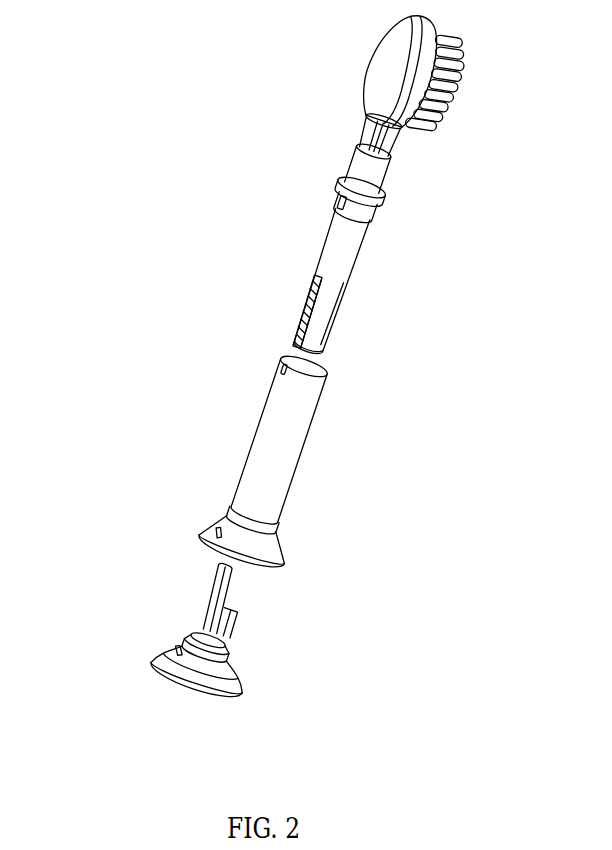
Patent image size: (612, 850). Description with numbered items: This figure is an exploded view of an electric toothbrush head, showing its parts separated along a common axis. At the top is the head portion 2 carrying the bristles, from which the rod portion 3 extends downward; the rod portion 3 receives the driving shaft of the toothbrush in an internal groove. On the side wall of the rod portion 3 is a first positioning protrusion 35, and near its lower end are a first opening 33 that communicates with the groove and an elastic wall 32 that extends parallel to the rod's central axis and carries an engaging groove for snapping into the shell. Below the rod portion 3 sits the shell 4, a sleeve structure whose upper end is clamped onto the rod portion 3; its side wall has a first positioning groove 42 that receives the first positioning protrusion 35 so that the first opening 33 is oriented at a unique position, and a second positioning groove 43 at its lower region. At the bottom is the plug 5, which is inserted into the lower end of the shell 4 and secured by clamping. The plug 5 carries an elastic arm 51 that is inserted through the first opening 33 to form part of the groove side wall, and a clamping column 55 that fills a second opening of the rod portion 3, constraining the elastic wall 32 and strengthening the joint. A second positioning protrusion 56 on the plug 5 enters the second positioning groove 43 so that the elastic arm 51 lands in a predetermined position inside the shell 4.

The head portion 2 is at (378, 82).
The rod portion 3 is at (332, 257).
The first positioning protrusion 35 is at (343, 210).
The first opening 33 is at (305, 312).
The elastic wall 32 is at (295, 333).
The shell 4 is at (255, 462).
The first positioning groove 42 is at (278, 366).
The second positioning groove 43 is at (212, 540).
The elastic arm 51 is at (215, 580).
The clamping column 55 is at (235, 617).
The plug 5 is at (155, 668).
The second positioning protrusion 56 is at (178, 648).